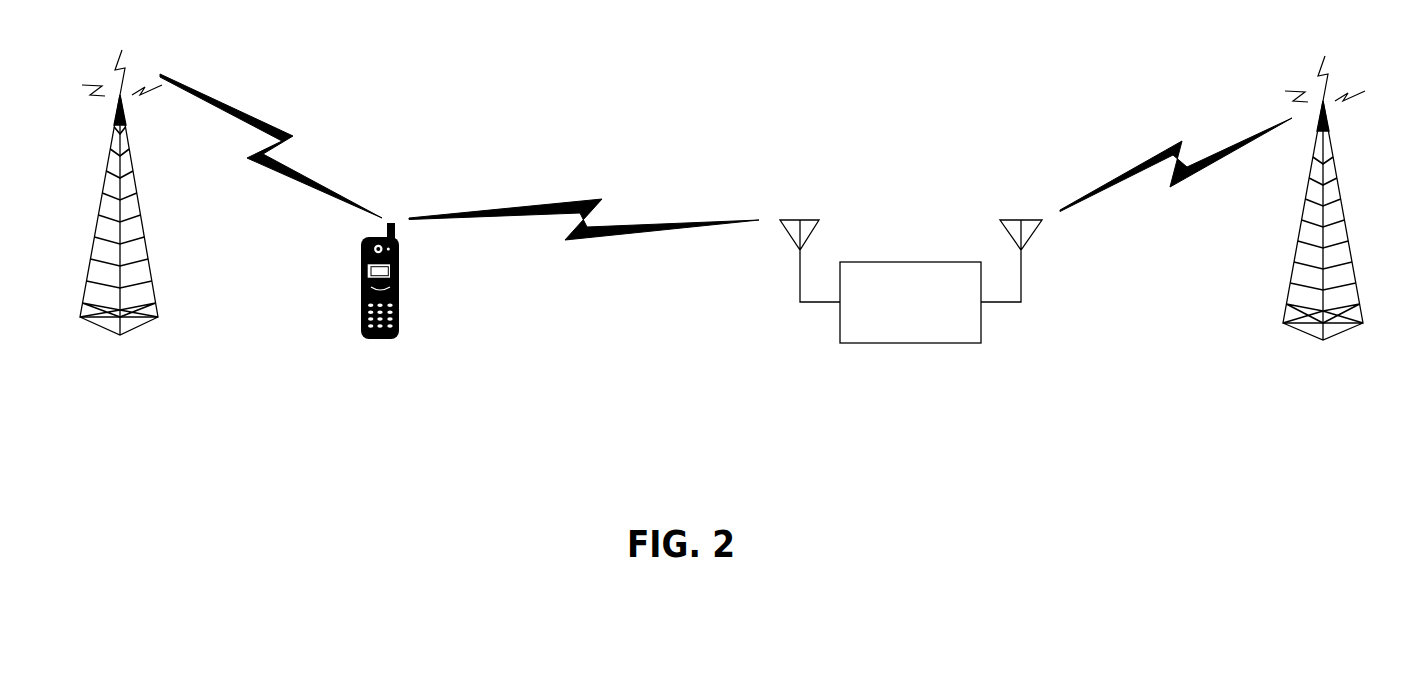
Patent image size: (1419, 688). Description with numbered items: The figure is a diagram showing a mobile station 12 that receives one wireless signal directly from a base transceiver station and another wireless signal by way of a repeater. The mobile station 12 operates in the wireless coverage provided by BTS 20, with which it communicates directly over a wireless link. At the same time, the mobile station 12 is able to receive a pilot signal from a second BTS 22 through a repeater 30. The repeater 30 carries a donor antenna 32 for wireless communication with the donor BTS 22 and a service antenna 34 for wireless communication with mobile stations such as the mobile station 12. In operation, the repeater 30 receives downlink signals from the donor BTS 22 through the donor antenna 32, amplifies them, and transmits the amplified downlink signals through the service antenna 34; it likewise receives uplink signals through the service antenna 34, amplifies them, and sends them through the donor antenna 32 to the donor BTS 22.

The mobile station 12 is at (378, 340).
The BTS 20 is at (120, 335).
The BTS 22 is at (1323, 340).
The repeater 30 is at (910, 343).
The donor antenna 32 is at (1032, 235).
The service antenna 34 is at (785, 232).